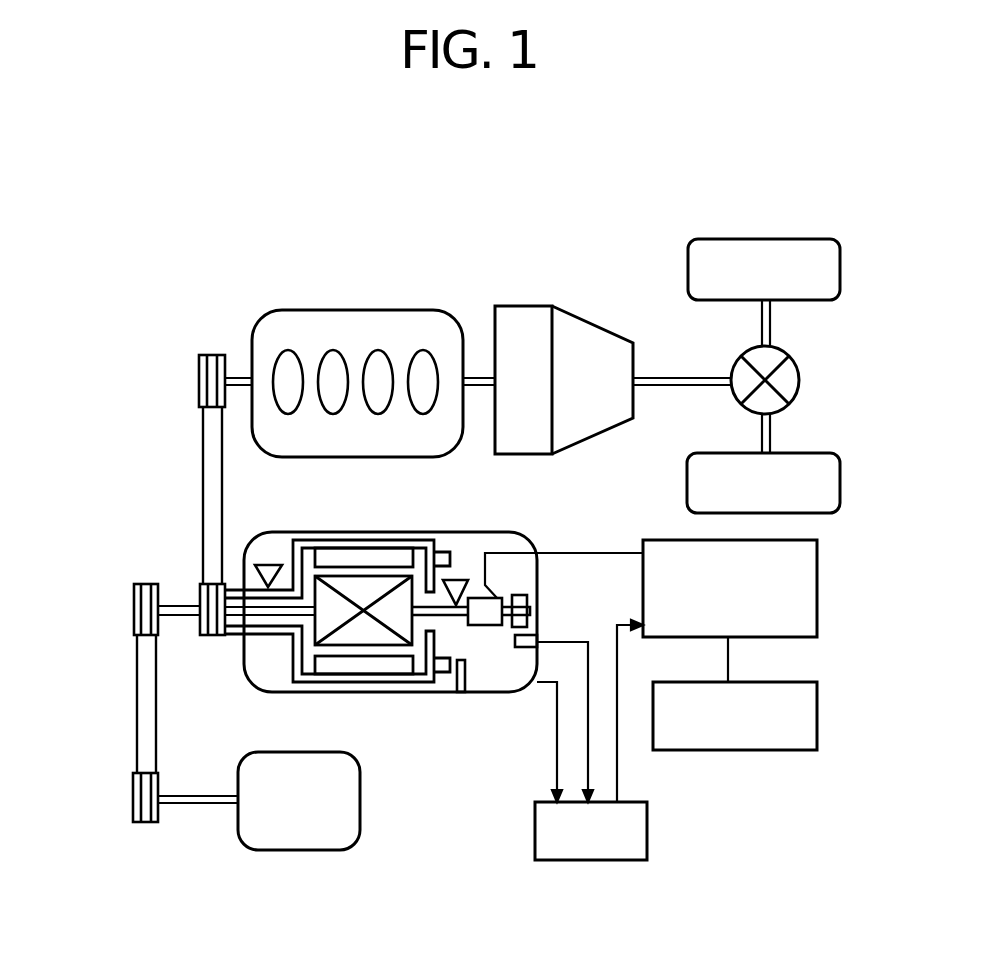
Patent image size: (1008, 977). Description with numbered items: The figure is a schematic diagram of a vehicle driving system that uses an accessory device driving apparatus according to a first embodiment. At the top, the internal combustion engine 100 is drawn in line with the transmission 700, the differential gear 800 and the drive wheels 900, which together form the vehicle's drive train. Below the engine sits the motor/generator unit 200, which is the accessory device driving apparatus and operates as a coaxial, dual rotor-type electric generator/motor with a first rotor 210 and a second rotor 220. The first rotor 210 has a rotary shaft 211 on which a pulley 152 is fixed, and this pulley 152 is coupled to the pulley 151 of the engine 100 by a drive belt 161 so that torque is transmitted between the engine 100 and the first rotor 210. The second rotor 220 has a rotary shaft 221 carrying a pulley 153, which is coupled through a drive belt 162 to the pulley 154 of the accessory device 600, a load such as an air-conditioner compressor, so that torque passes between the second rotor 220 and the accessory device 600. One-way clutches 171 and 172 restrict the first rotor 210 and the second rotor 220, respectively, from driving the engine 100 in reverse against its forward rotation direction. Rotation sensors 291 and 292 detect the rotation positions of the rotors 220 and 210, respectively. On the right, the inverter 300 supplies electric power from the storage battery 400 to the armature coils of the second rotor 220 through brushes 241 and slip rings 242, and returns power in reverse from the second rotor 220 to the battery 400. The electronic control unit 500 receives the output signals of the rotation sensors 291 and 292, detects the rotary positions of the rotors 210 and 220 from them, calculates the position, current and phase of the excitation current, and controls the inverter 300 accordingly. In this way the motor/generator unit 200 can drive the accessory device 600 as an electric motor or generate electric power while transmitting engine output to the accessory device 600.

The internal combustion engine 100 is at (323, 310).
The transmission 700 is at (522, 306).
The drive wheels 900 is at (688, 262).
The differential gear 800 is at (799, 378).
The pulley 151 is at (199, 373).
The drive belt 161 is at (210, 452).
The pulley 152 is at (198, 590).
The pulley 153 is at (136, 598).
The drive belt 162 is at (140, 675).
The pulley 154 is at (133, 785).
The one-way clutch 171 is at (267, 564).
The one-way clutch 172 is at (457, 579).
The motor/generator unit 200 is at (347, 524).
The rotary shaft 211 is at (263, 634).
The first rotor 210 is at (358, 667).
The second rotor 220 is at (391, 634).
The rotary shaft 221 is at (240, 615).
The brushes 241 is at (476, 572).
The slip rings 242 is at (506, 598).
The rotation sensor 291 is at (538, 623).
The rotation sensor 292 is at (467, 690).
The inverter 300 is at (817, 590).
The storage battery 400 is at (817, 713).
The electronic control unit 500 is at (647, 830).
The accessory device 600 is at (360, 828).